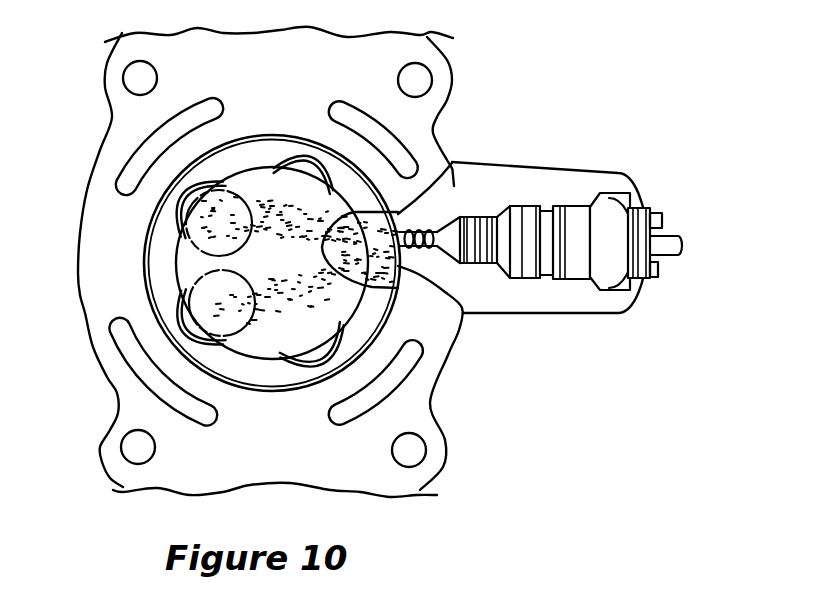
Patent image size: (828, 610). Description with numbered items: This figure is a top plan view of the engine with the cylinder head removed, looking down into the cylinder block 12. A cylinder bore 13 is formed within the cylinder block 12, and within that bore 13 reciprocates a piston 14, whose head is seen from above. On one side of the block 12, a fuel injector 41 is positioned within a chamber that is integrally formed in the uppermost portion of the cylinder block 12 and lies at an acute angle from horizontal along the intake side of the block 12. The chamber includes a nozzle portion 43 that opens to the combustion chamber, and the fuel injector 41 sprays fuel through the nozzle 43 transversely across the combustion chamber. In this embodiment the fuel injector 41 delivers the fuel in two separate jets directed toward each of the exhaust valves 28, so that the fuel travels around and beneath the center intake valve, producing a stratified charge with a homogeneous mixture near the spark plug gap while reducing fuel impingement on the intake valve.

The cylinder block 12 is at (137, 113).
The cylinder bore 13 is at (148, 225).
The piston 14 is at (163, 268).
The exhaust valves 28 is at (240, 190).
The fuel injector 41 is at (568, 277).
The nozzle portion 43 is at (412, 208).